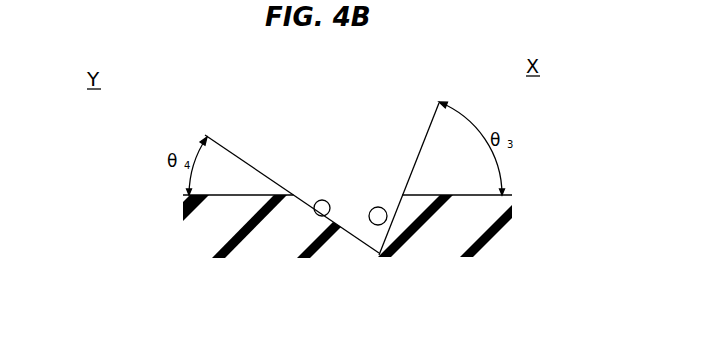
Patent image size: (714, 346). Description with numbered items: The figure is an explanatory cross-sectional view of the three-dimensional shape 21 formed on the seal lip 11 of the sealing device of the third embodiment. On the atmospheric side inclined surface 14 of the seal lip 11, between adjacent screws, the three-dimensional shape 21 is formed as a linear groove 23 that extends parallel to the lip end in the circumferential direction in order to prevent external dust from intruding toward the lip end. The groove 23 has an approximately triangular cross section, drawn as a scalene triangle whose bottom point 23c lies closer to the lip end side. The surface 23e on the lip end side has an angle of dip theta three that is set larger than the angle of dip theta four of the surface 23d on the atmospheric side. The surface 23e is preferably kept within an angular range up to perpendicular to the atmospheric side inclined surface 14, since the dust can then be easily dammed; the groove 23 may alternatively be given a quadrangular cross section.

The seal lip 11 is at (208, 230).
The atmospheric side inclined surface 14 is at (185, 193).
The three-dimensional shape 21 is at (340, 190).
The groove 23 is at (357, 194).
The bottom point 23c is at (381, 225).
The surface in the atmospheric side 23d is at (316, 214).
The surface in the lip end side 23e is at (396, 258).